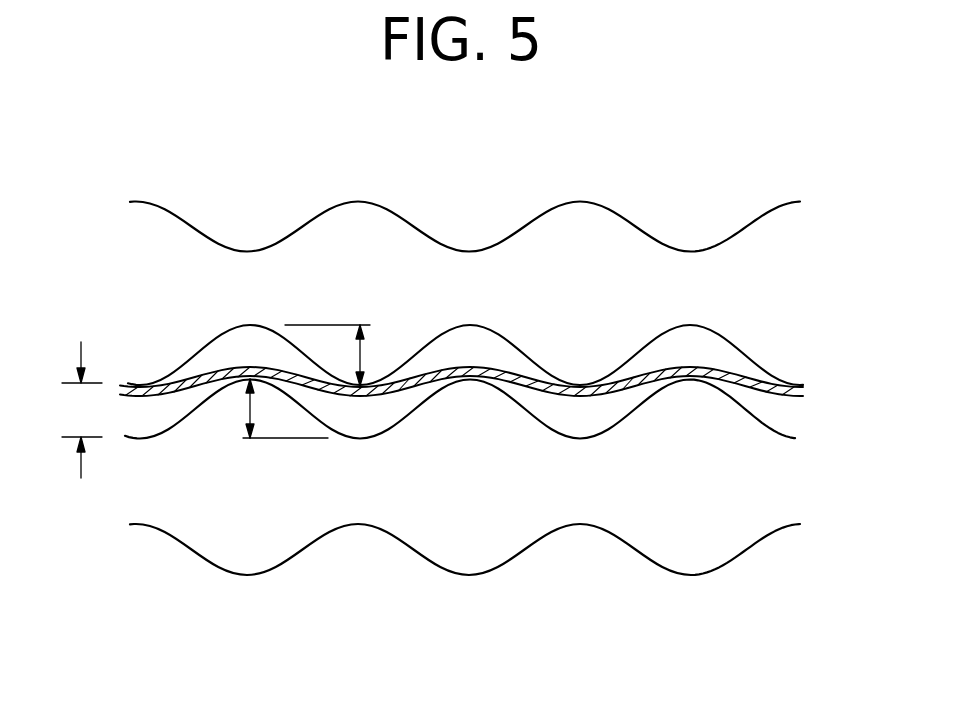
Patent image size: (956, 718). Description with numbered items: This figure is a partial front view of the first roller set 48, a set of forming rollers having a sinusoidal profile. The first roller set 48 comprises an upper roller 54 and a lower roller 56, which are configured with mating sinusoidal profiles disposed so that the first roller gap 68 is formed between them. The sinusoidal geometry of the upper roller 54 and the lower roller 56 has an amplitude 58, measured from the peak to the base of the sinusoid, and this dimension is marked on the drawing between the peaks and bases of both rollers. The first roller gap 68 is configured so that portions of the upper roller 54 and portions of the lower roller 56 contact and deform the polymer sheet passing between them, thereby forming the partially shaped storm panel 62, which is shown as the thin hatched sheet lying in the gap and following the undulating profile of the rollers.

The first roller set 48 is at (434, 186).
The upper roller 54 is at (592, 313).
The lower roller 56 is at (486, 494).
The amplitude 58 is at (363, 355).
The partially shaped storm panel 62 is at (357, 405).
The first roller gap 68 is at (82, 393).